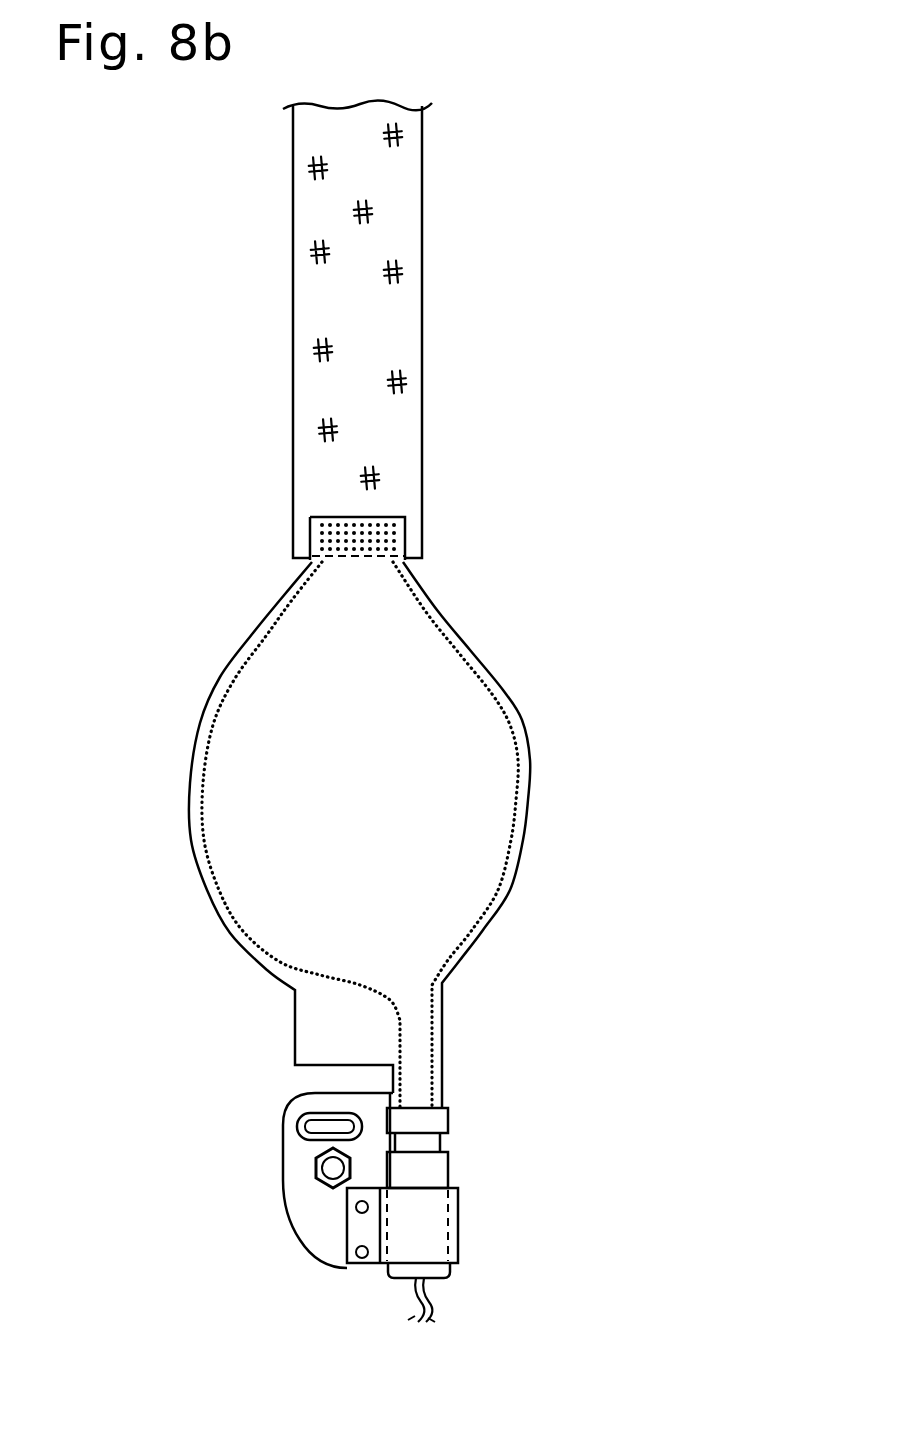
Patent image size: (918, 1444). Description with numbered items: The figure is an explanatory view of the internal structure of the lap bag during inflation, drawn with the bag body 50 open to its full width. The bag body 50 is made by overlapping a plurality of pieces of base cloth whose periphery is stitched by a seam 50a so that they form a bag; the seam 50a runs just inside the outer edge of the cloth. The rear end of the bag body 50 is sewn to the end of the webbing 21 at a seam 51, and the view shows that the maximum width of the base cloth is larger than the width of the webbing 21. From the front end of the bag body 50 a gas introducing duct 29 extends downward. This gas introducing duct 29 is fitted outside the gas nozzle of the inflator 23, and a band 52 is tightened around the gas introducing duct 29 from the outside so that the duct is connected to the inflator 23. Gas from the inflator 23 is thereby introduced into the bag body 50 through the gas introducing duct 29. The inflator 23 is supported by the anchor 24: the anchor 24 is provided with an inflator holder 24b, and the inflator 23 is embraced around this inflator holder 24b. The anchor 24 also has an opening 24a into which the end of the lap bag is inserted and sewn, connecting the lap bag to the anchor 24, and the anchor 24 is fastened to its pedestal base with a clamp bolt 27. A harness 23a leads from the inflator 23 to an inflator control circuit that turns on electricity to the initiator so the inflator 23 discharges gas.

The webbing 21 is at (407, 298).
The seam 51 is at (393, 527).
The bag body 50 is at (530, 743).
The seam 50a is at (207, 772).
The gas introducing duct 29 is at (410, 1038).
The band 52 is at (432, 1127).
The inflator 23 is at (435, 1168).
The anchor 24 is at (320, 1222).
The opening 24a is at (303, 1153).
The clamp bolt 27 is at (330, 1168).
The inflator holder 24b is at (438, 1250).
The harness 23a is at (410, 1298).